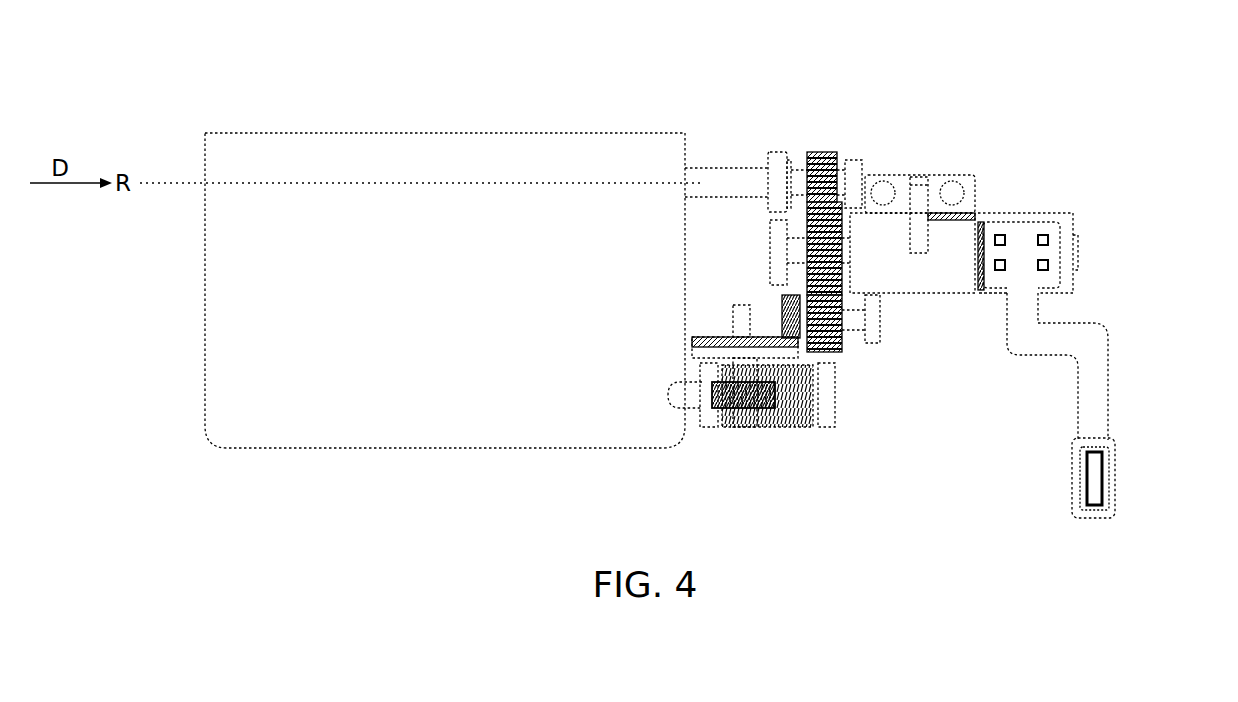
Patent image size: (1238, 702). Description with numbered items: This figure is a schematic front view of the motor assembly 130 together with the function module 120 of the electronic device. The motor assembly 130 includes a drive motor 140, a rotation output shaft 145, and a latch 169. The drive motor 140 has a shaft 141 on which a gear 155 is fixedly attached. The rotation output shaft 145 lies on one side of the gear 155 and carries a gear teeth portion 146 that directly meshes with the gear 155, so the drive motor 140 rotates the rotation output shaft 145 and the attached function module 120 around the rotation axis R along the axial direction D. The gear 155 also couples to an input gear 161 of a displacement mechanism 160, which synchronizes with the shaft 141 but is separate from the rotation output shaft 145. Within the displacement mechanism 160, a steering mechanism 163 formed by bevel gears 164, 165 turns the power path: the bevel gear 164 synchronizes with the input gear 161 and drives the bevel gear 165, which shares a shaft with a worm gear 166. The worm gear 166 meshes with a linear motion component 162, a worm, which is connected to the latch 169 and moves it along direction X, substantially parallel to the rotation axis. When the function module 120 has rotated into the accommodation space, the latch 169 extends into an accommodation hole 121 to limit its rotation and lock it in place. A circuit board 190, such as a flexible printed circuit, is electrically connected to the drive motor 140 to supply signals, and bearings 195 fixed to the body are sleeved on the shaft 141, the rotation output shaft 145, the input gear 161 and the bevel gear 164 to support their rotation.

The function module 120 is at (386, 432).
The accommodation hole 121 is at (652, 400).
The motor assembly 130 is at (1025, 90).
The drive motor 140 is at (1020, 212).
The shaft 141 is at (797, 245).
The rotation output shaft 145 is at (748, 167).
The gear teeth portion 146 is at (820, 150).
The gear 155 is at (843, 268).
The displacement mechanism 160 is at (765, 480).
The input gear 161 is at (843, 347).
The linear motion component 162 is at (805, 430).
The steering mechanism 163 is at (1172, 88).
The bevel gear 164 is at (807, 268).
The bevel gear 165 is at (718, 340).
The worm gear 166 is at (740, 430).
The latch 169 is at (693, 407).
The circuit board 190 is at (1100, 385).
The bearings 195 is at (852, 160).